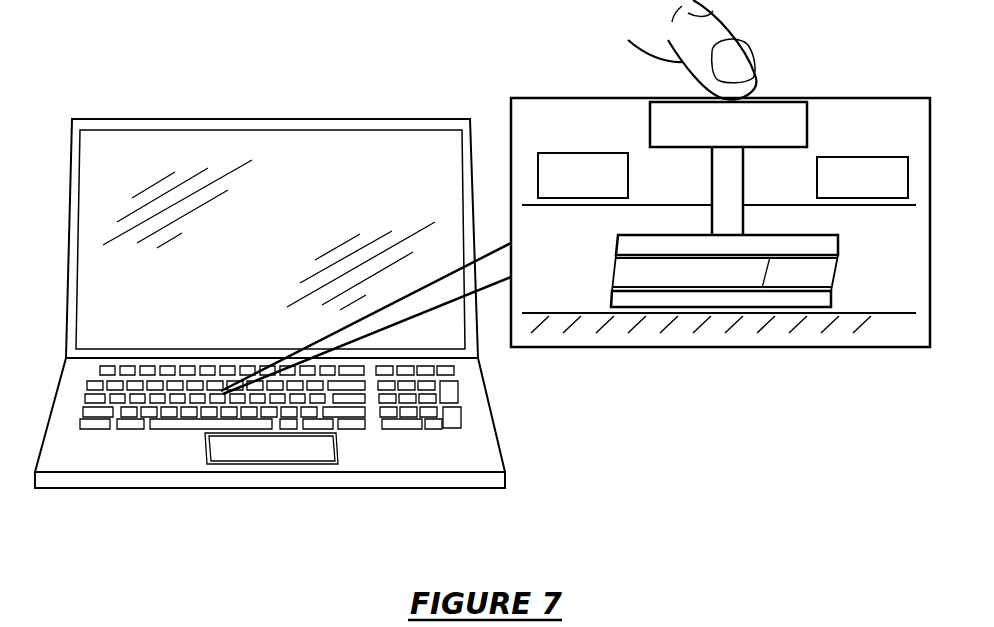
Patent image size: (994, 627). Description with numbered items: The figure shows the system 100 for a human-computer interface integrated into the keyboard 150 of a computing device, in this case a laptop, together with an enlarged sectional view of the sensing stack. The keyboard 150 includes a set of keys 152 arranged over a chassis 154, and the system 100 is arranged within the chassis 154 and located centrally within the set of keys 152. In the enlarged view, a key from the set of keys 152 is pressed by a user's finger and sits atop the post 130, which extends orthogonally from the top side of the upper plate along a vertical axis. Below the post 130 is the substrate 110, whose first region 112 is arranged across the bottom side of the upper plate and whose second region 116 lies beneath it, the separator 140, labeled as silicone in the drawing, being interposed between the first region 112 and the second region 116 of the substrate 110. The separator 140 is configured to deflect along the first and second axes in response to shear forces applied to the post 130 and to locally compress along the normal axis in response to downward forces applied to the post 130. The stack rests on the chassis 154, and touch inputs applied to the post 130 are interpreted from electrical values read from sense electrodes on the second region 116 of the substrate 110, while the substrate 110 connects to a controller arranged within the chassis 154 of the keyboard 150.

The system 100 is at (92, 98).
The substrate 110 is at (838, 258).
The first region 112 is at (647, 247).
The second region 116 is at (622, 305).
The post 130 is at (720, 211).
The separator 140 is at (633, 276).
The keyboard 150 is at (67, 402).
The set of keys 152 is at (125, 428).
The chassis 154 is at (373, 476).